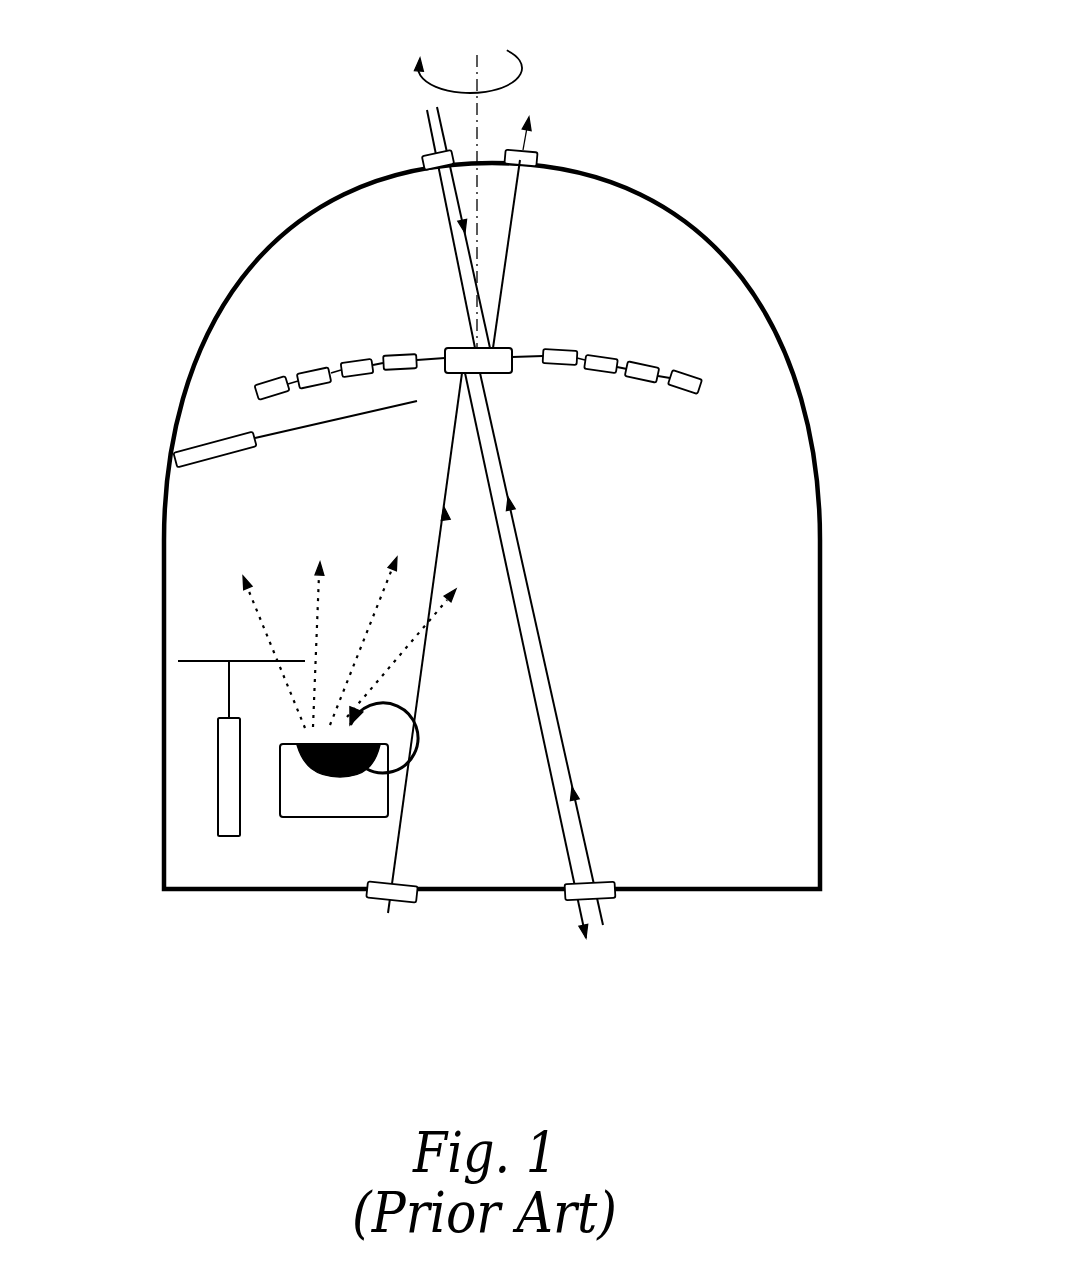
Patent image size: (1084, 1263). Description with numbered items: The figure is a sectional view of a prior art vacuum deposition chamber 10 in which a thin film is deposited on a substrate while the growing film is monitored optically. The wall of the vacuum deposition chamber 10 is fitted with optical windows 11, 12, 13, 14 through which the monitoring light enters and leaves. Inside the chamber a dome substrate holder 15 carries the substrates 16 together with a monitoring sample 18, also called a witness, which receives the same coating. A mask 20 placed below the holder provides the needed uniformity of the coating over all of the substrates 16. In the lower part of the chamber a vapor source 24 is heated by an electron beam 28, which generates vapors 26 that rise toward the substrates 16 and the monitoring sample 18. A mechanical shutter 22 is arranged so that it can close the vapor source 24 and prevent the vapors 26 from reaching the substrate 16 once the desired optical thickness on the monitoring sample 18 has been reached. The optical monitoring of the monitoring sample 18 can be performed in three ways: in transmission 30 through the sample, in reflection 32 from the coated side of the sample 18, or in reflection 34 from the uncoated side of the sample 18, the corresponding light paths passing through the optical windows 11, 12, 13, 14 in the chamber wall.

The vacuum deposition chamber 10 is at (657, 210).
The optical window 11 is at (405, 903).
The optical window 12 is at (608, 903).
The optical window 13 is at (536, 150).
The optical window 14 is at (424, 151).
The dome substrate holder 15 is at (533, 358).
The substrates 16 is at (683, 372).
The monitoring sample 18 is at (505, 373).
The mask 20 is at (283, 432).
The mechanical shutter 22 is at (210, 660).
The vapor source 24 is at (302, 817).
The vapors 26 is at (316, 595).
The electron beam 28 is at (420, 736).
The transmission 30 is at (538, 632).
The reflection from the coated side 32 is at (535, 707).
The reflection from the uncoated side 34 is at (509, 233).